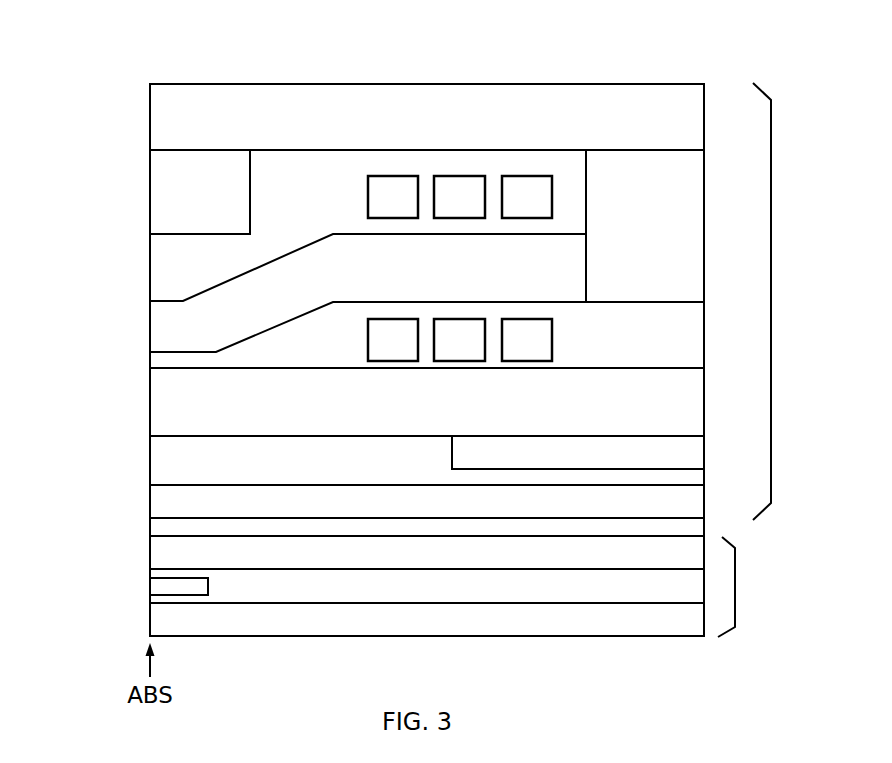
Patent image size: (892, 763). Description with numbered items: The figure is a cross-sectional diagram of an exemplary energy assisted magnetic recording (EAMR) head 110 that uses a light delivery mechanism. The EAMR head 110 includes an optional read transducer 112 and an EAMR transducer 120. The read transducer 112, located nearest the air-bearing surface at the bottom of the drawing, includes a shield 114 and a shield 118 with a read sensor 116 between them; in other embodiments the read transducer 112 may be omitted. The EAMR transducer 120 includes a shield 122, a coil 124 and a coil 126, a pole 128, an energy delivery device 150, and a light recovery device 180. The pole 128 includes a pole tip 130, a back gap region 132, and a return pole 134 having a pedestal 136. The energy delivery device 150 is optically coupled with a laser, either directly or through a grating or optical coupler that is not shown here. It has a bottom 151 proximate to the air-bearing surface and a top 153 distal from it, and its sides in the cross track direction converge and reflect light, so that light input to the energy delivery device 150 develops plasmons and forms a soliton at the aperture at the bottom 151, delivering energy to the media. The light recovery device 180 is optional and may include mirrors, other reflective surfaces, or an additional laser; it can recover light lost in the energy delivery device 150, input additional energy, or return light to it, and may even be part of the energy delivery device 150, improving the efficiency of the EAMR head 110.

The EAMR head 110 is at (397, 27).
The read transducer 112 is at (735, 587).
The shield 114 is at (150, 633).
The read sensor 116 is at (186, 595).
The shield 118 is at (586, 570).
The EAMR transducer 120 is at (771, 301).
The shield 122 is at (150, 504).
The coil 124 is at (582, 343).
The coil 126 is at (338, 190).
The pole 128 is at (75, 329).
The pole tip 130 is at (150, 336).
The back gap region 132 is at (704, 255).
The return pole 134 is at (704, 100).
The pedestal 136 is at (150, 201).
The energy delivery device 150 is at (704, 393).
The bottom 151 is at (127, 404).
The top 153 is at (725, 416).
The light recovery device 180 is at (704, 469).